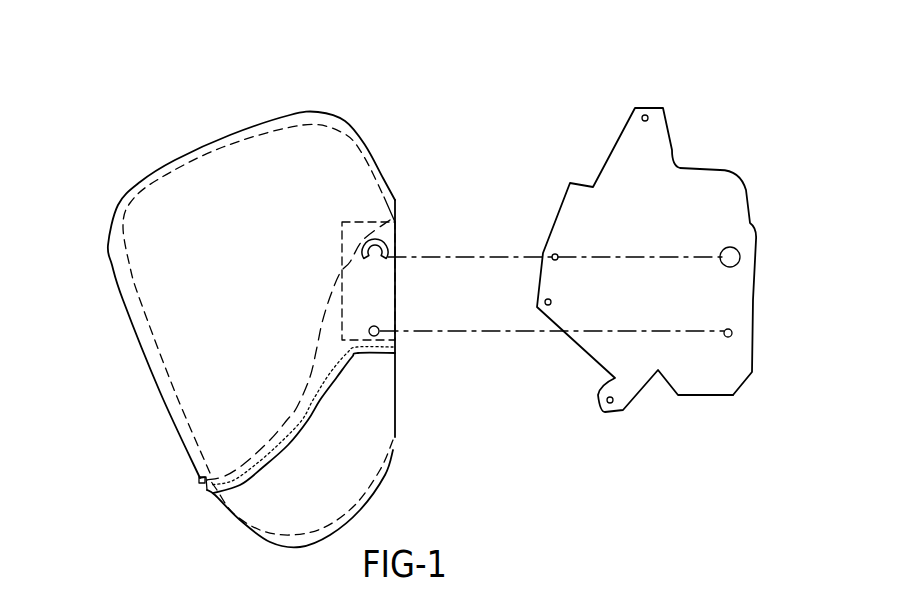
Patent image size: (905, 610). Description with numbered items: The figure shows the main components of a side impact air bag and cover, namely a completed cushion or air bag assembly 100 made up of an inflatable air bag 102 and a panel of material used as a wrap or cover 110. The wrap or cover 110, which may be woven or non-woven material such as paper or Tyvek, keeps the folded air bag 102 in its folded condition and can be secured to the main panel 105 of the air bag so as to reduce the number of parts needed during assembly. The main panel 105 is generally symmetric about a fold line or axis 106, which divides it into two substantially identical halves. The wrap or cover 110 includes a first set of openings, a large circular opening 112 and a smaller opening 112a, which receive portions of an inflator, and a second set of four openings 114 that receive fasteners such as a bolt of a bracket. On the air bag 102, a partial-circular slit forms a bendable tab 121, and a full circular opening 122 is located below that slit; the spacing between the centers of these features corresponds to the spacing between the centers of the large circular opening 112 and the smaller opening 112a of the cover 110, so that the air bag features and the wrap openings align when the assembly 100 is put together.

The air bag assembly 100 is at (149, 167).
The inflatable air bag 102 is at (203, 178).
The main panel 105 is at (180, 310).
The fold line 106 is at (400, 400).
The wrap or cover 110 is at (588, 207).
The large circular opening 112 is at (764, 282).
The smaller opening 112a is at (615, 332).
The openings 114 is at (645, 113).
The bendable tab 121 is at (383, 251).
The full circular opening 122 is at (383, 237).